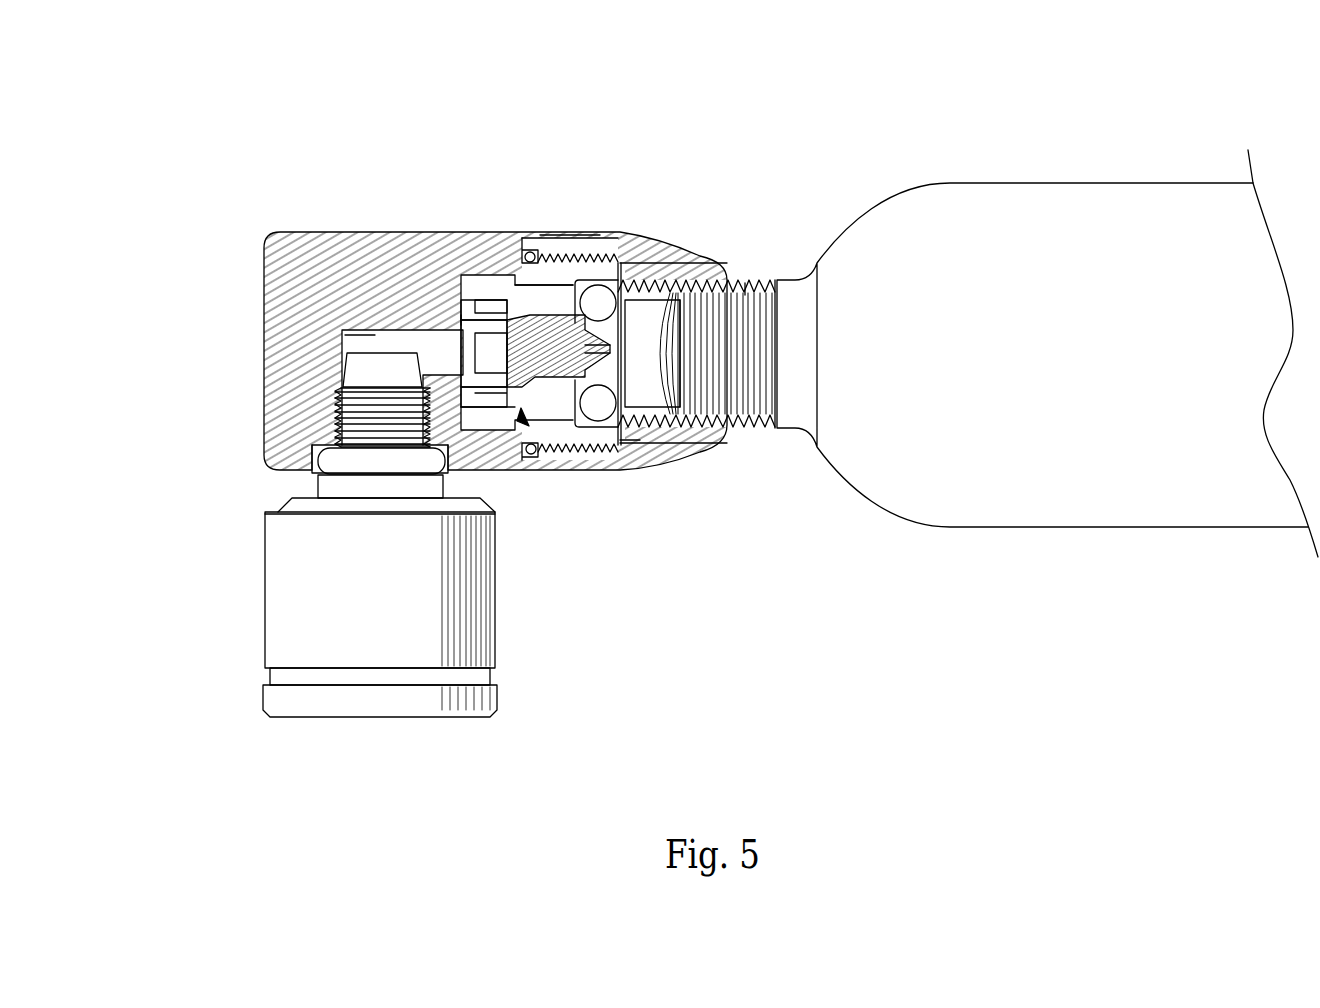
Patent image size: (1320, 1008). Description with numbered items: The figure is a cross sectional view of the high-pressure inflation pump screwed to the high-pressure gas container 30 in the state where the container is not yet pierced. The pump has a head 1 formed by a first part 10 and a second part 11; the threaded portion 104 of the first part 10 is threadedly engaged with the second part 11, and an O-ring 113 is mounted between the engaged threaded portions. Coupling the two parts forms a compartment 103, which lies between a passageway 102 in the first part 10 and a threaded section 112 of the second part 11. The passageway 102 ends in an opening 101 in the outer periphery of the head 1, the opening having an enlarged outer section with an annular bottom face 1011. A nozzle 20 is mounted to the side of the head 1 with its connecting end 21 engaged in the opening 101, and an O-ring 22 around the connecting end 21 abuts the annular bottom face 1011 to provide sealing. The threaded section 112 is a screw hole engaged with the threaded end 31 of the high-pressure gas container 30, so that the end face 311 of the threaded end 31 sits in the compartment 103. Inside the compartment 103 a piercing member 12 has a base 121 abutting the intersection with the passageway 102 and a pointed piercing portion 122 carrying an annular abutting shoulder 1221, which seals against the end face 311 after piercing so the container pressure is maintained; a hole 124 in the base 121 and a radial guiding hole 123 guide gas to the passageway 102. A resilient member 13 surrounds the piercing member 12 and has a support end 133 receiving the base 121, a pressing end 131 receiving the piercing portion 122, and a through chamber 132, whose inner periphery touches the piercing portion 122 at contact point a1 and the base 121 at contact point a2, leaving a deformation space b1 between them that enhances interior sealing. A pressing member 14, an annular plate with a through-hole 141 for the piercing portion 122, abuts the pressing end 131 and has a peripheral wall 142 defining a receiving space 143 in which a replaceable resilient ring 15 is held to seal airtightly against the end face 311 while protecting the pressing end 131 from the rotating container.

The head 1 is at (148, 402).
The first part 10 is at (298, 368).
The opening 101 is at (340, 408).
The connecting end 21 is at (382, 370).
The annular bottom face 1011 is at (317, 447).
The passageway 102 is at (357, 342).
The compartment 103 is at (525, 280).
The threaded portion 104 is at (562, 250).
The second part 11 is at (650, 240).
The threaded section 112 is at (613, 363).
The threaded end 31 is at (716, 353).
The O-ring 113 is at (533, 256).
The piercing member 12 is at (596, 415).
The base 121 is at (463, 318).
The piercing portion 122 is at (618, 330).
The annular abutting shoulder 1221 is at (700, 428).
The guiding hole 123 is at (472, 305).
The hole 124 is at (467, 343).
The resilient member 13 is at (520, 407).
The pressing end 131 is at (570, 365).
The chamber 132 is at (560, 320).
The support end 133 is at (495, 423).
The pressing member 14 is at (600, 282).
The through-hole 141 is at (636, 445).
The peripheral wall 142 is at (643, 263).
The receiving space 143 is at (615, 362).
The resilient ring 15 is at (628, 458).
The nozzle 20 is at (467, 617).
The O-ring 22 is at (430, 462).
The high-pressure gas container 30 is at (1045, 500).
The end face 311 is at (745, 435).
The contact point a1 is at (498, 343).
The contact point a2 is at (467, 350).
The deformation space b1 is at (492, 305).